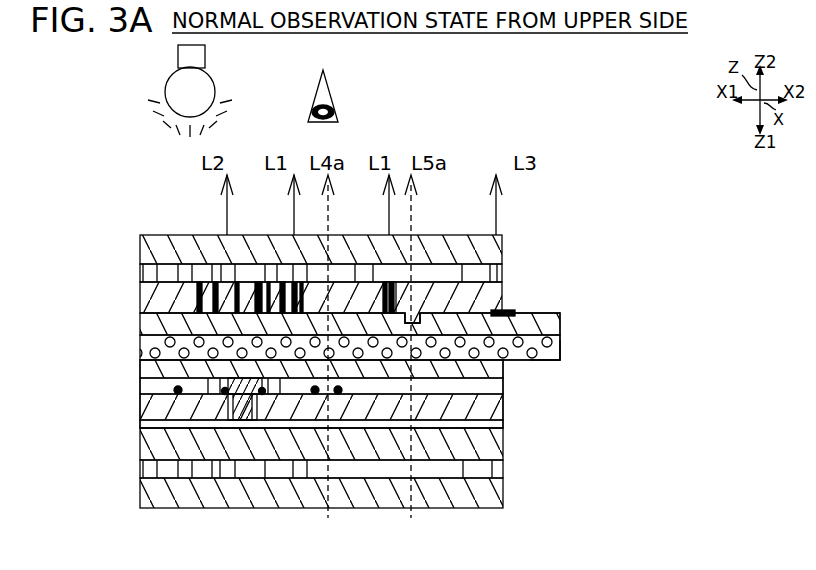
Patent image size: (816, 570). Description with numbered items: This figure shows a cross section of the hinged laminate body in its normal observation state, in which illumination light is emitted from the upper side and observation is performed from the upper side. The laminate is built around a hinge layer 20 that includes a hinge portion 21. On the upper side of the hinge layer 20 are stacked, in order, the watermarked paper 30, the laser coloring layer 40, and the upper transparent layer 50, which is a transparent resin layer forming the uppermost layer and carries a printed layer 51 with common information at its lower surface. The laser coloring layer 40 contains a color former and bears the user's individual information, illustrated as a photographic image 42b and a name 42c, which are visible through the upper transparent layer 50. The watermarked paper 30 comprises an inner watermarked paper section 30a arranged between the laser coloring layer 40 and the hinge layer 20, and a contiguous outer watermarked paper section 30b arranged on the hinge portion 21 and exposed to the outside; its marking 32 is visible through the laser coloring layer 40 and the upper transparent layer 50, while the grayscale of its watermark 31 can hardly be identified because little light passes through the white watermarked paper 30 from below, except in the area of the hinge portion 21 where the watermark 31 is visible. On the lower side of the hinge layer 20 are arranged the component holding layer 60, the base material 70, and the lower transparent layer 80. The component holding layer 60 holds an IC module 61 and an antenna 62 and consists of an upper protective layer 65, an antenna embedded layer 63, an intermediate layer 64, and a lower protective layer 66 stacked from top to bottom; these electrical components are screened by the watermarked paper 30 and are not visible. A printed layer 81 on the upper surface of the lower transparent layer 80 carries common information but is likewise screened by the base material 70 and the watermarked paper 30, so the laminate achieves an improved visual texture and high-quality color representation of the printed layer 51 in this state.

The upper transparent layer 50 is at (503, 247).
The printed layer 51 is at (503, 270).
The laser coloring layer 40 is at (474, 262).
The photographic image 42b is at (278, 283).
The name 42c is at (384, 283).
The watermarked paper 30 is at (408, 339).
The inner watermarked paper section 30a is at (148, 330).
The outer watermarked paper section 30b is at (558, 334).
The watermark 31 is at (418, 323).
The marking 32 is at (497, 313).
The hinge layer 20 is at (558, 350).
The hinge portion 21 is at (552, 360).
The component holding layer 60 is at (342, 388).
The upper protective layer 65 is at (493, 368).
The antenna embedded layer 63 is at (317, 388).
The intermediate layer 64 is at (490, 408).
The lower protective layer 66 is at (346, 434).
The antenna 62 is at (176, 387).
The IC module 61 is at (218, 398).
The base material 70 is at (498, 453).
The printed layer 81 is at (498, 470).
The lower transparent layer 80 is at (490, 485).